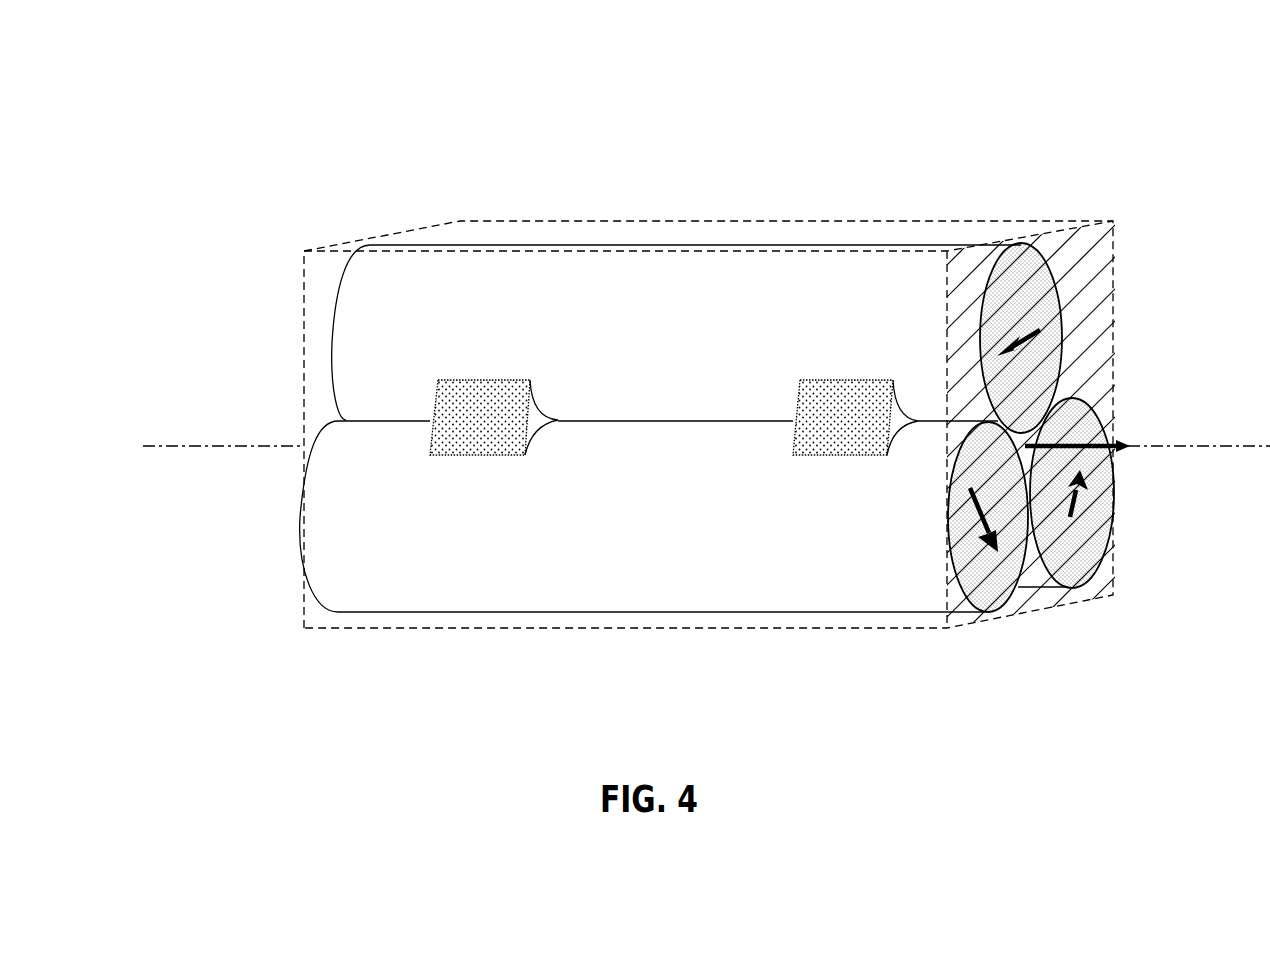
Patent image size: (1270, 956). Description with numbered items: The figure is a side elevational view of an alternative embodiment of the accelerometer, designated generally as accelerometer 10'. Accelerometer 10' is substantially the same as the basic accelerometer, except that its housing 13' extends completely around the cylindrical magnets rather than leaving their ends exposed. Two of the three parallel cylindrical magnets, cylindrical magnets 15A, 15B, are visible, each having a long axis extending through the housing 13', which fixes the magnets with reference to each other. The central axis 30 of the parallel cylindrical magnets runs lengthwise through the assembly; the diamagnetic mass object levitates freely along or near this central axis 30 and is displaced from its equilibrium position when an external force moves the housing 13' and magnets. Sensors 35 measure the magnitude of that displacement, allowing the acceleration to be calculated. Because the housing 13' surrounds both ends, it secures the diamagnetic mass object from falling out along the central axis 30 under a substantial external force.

The accelerometer 10' is at (696, 478).
The housing 13' is at (787, 478).
The cylindrical magnet 15A is at (399, 537).
The cylindrical magnet 15B is at (427, 324).
The central axis 30 is at (220, 445).
The sensors 35 is at (808, 393).